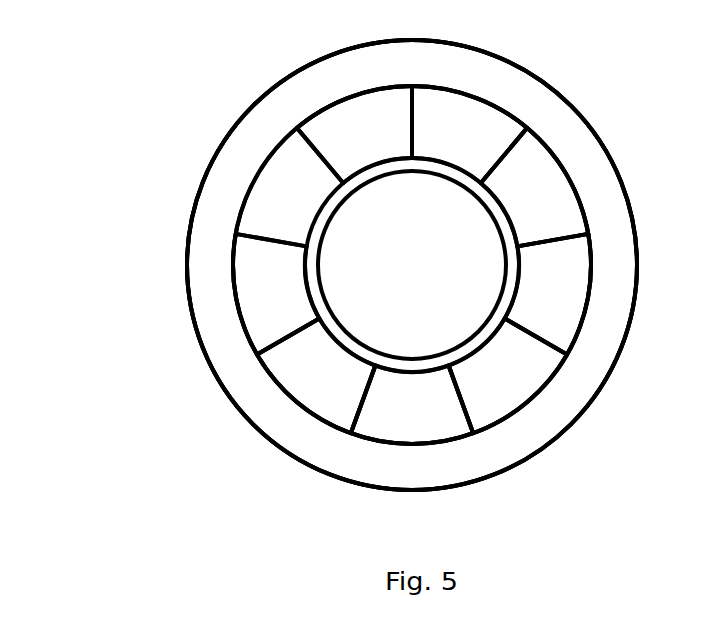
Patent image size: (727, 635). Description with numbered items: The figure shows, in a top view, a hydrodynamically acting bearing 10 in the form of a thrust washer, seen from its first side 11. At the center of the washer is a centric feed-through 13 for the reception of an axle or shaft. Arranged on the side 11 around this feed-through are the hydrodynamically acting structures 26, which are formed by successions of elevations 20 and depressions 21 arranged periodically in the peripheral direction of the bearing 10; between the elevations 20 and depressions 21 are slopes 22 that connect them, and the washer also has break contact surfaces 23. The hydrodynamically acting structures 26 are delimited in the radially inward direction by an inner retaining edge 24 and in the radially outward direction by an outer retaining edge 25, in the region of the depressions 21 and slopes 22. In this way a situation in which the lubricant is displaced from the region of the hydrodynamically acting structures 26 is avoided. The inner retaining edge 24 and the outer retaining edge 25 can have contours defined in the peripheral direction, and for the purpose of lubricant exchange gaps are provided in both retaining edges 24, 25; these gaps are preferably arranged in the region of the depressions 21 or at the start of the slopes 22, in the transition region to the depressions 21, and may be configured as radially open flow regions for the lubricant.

The hydrodynamically acting bearing 10 is at (90, 75).
The first side 11 is at (255, 210).
The centric feed-through 13 is at (422, 183).
The elevations 20 is at (468, 110).
The depressions 21 is at (297, 127).
The slopes 22 is at (357, 108).
The break contact surfaces 23 is at (480, 118).
The inner retaining edge 24 is at (310, 263).
The outer retaining edge 25 is at (213, 225).
The hydrodynamically acting structures 26 is at (600, 110).